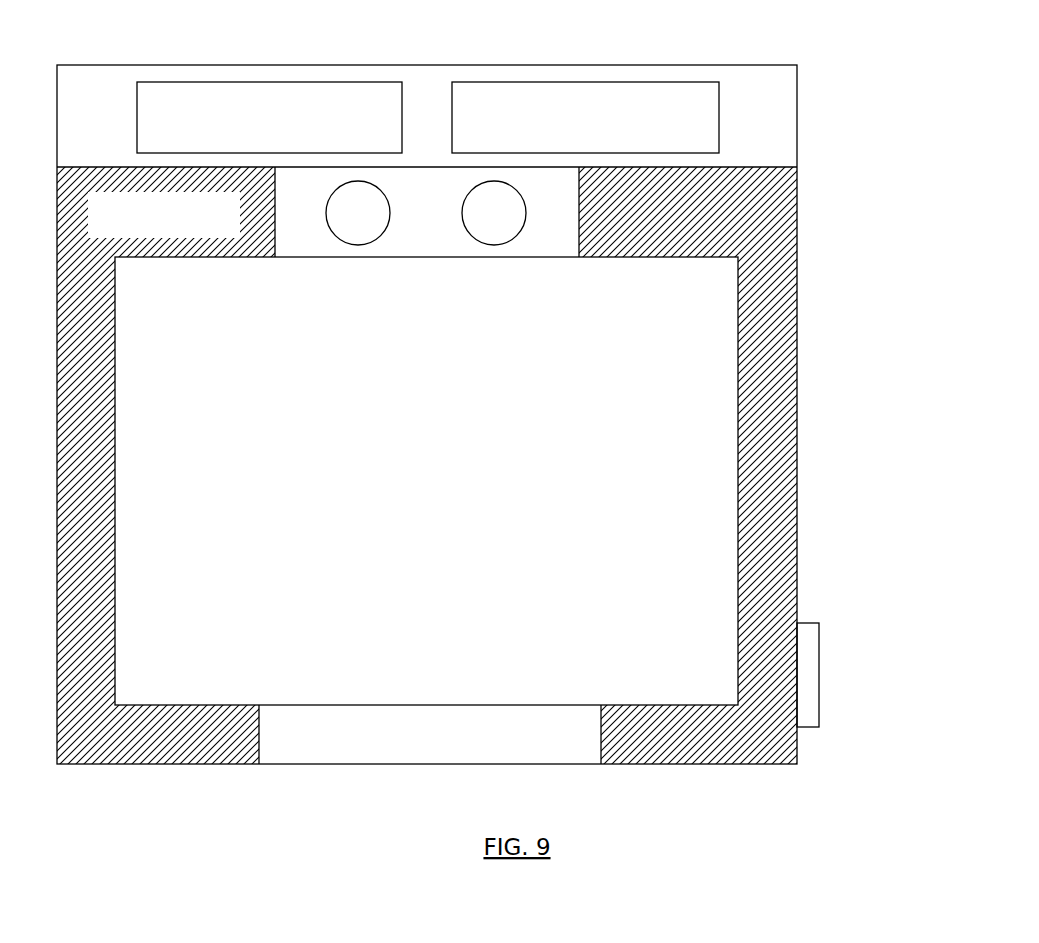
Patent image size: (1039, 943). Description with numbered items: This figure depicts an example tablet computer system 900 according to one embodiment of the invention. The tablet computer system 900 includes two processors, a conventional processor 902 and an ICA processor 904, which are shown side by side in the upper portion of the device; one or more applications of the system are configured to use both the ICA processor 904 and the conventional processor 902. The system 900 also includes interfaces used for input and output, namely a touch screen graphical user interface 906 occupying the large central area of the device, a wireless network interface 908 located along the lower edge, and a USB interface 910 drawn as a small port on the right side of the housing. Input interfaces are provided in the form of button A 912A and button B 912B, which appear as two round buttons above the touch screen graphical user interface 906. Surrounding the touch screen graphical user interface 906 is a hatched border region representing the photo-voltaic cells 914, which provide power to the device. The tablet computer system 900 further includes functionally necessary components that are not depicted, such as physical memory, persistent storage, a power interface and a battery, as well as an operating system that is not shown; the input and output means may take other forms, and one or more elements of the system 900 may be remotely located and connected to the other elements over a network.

The tablet computer system 900 is at (836, 90).
The conventional processor 902 is at (269, 117).
The ICA processor 904 is at (585, 117).
The touch screen graphical user interface 906 is at (426, 481).
The wireless network interface 908 is at (430, 734).
The USB interface 910 is at (819, 659).
The button A 912A is at (353, 245).
The button B 912B is at (497, 245).
The photo-voltaic cells 914 is at (427, 465).